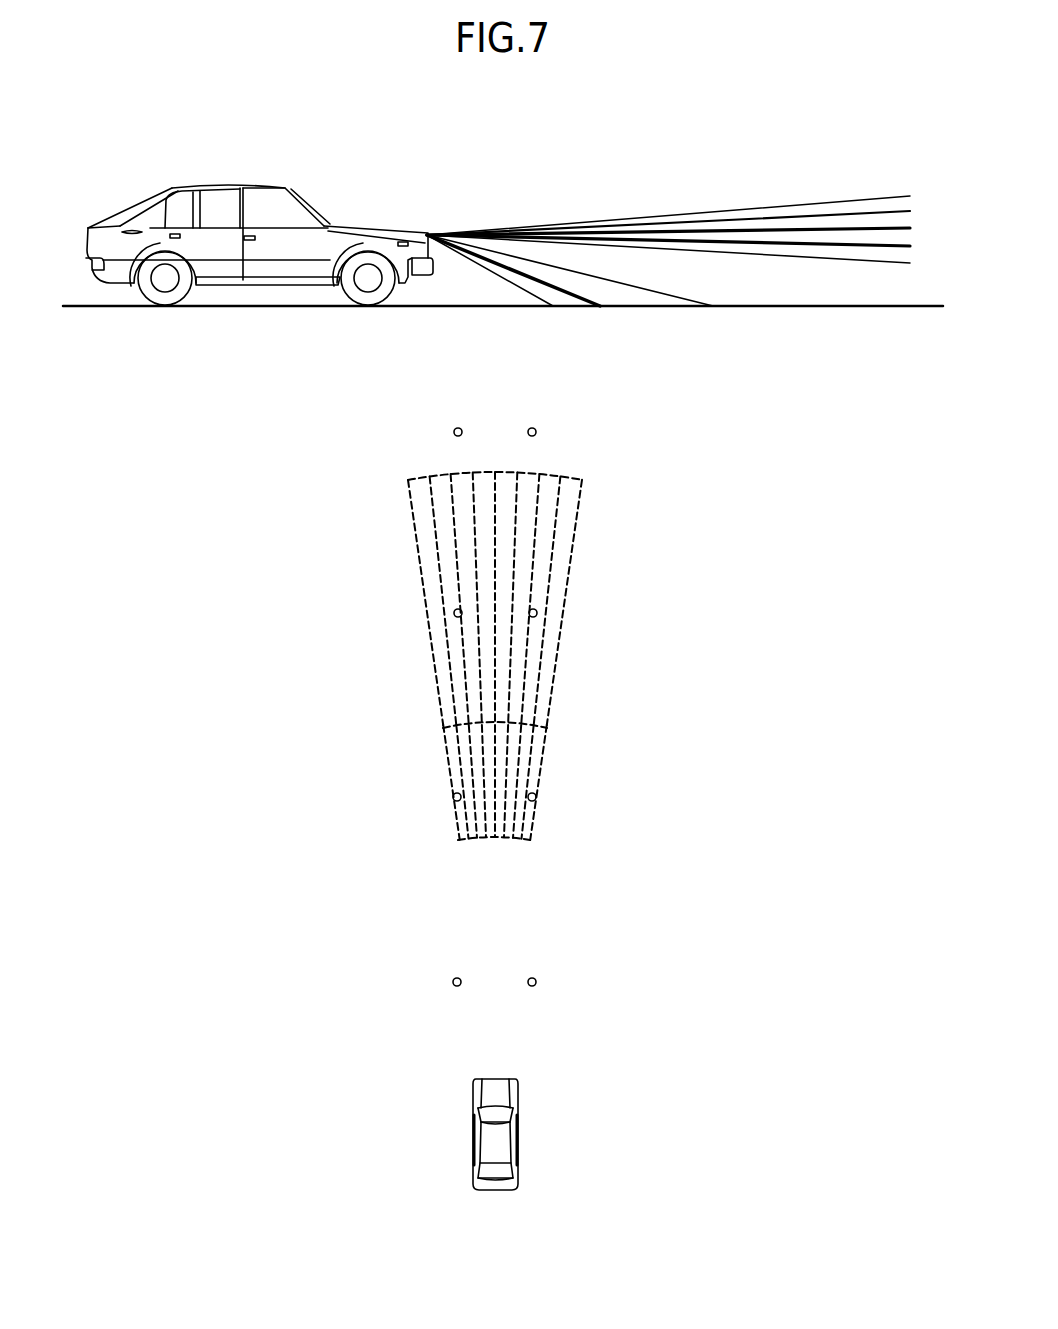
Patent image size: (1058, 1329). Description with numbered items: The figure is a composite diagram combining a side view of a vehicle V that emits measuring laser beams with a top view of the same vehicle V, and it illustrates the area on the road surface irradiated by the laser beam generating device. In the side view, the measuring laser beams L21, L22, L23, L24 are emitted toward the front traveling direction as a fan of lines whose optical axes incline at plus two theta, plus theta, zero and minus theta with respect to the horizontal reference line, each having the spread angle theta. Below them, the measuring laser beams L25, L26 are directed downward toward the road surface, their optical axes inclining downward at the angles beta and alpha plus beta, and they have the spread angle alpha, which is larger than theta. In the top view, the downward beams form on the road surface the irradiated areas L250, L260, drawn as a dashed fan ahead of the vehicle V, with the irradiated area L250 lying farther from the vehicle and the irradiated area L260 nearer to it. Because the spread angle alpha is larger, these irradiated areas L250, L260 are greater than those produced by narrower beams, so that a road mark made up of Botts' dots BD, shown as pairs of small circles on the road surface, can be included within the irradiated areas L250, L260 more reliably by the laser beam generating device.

The measuring laser beam L21 is at (740, 215).
The measuring laser beam L22 is at (780, 223).
The measuring laser beam L23 is at (820, 238).
The measuring laser beam L24 is at (860, 252).
The measuring laser beam L25 is at (633, 298).
The measuring laser beam L26 is at (565, 298).
The irradiated area L250 is at (535, 670).
The irradiated area L260 is at (535, 788).
The Botts' dots BD is at (535, 986).
The vehicle V is at (259, 245).